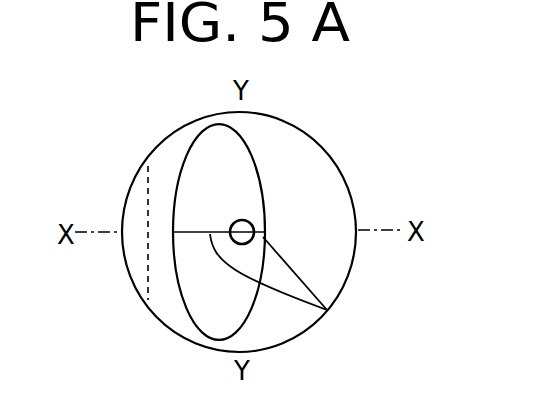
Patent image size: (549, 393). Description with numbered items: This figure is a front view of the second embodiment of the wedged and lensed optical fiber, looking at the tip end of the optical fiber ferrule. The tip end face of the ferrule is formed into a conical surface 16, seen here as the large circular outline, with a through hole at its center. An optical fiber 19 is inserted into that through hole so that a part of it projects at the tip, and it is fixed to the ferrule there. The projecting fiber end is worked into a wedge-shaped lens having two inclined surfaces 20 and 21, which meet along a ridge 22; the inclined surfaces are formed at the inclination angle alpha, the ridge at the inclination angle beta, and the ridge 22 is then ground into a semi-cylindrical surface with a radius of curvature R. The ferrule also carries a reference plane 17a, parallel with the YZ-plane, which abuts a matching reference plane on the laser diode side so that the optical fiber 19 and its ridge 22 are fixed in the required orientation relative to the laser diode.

The conical surface 16 is at (318, 207).
The reference plane 17a is at (148, 270).
The optical fiber 19 is at (250, 222).
The inclined surface 20 is at (208, 177).
The inclined surface 21 is at (207, 285).
The ridge 22 is at (327, 310).